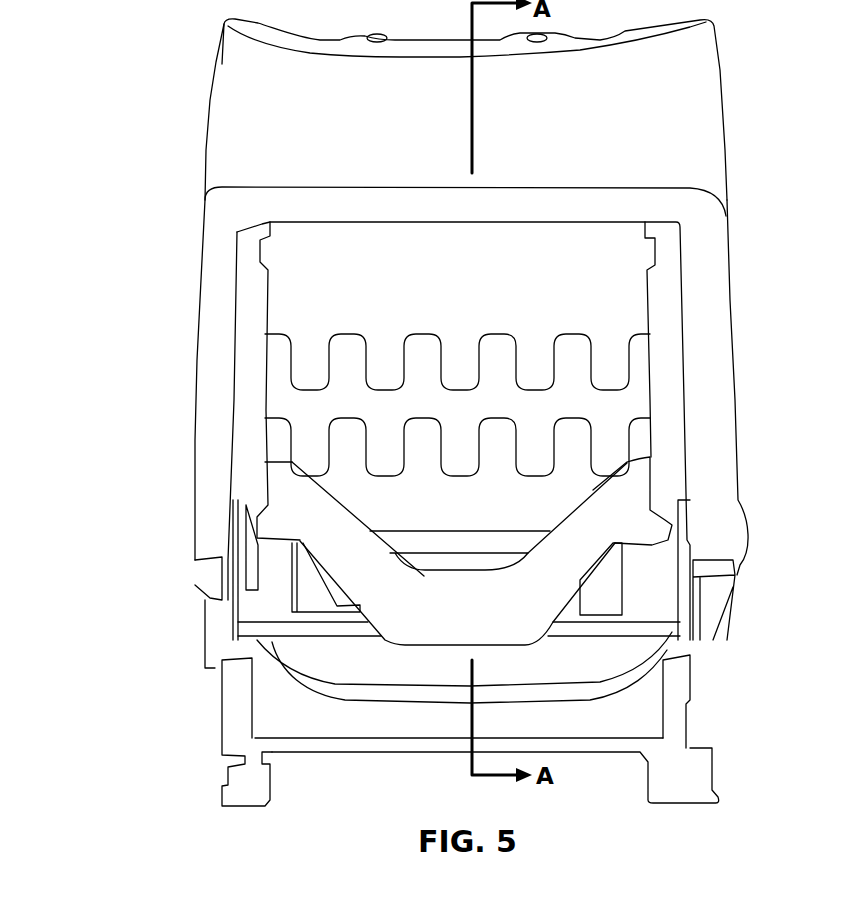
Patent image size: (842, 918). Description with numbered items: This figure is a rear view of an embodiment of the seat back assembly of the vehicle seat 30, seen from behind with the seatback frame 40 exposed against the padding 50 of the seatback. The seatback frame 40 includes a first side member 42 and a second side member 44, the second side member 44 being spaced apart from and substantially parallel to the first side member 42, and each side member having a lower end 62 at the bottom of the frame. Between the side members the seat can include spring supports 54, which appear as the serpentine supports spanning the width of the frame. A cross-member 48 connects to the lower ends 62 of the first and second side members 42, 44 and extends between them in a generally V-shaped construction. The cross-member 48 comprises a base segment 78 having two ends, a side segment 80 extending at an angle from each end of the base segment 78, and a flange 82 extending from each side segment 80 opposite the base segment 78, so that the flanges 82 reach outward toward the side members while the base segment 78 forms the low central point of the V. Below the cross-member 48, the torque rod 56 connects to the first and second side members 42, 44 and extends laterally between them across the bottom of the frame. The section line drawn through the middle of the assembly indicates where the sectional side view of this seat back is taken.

The vehicle seat 30 is at (136, 122).
The padding 50 is at (722, 70).
The seatback frame 40 is at (222, 270).
The second side member 44 is at (250, 282).
The first side member 42 is at (665, 292).
The spring supports 54 is at (558, 332).
The lower end 62 is at (250, 475).
The flange 82 is at (283, 490).
The side segment 80 is at (347, 557).
The cross-member 48 is at (638, 545).
The base segment 78 is at (475, 615).
The torque rod 56 is at (330, 637).